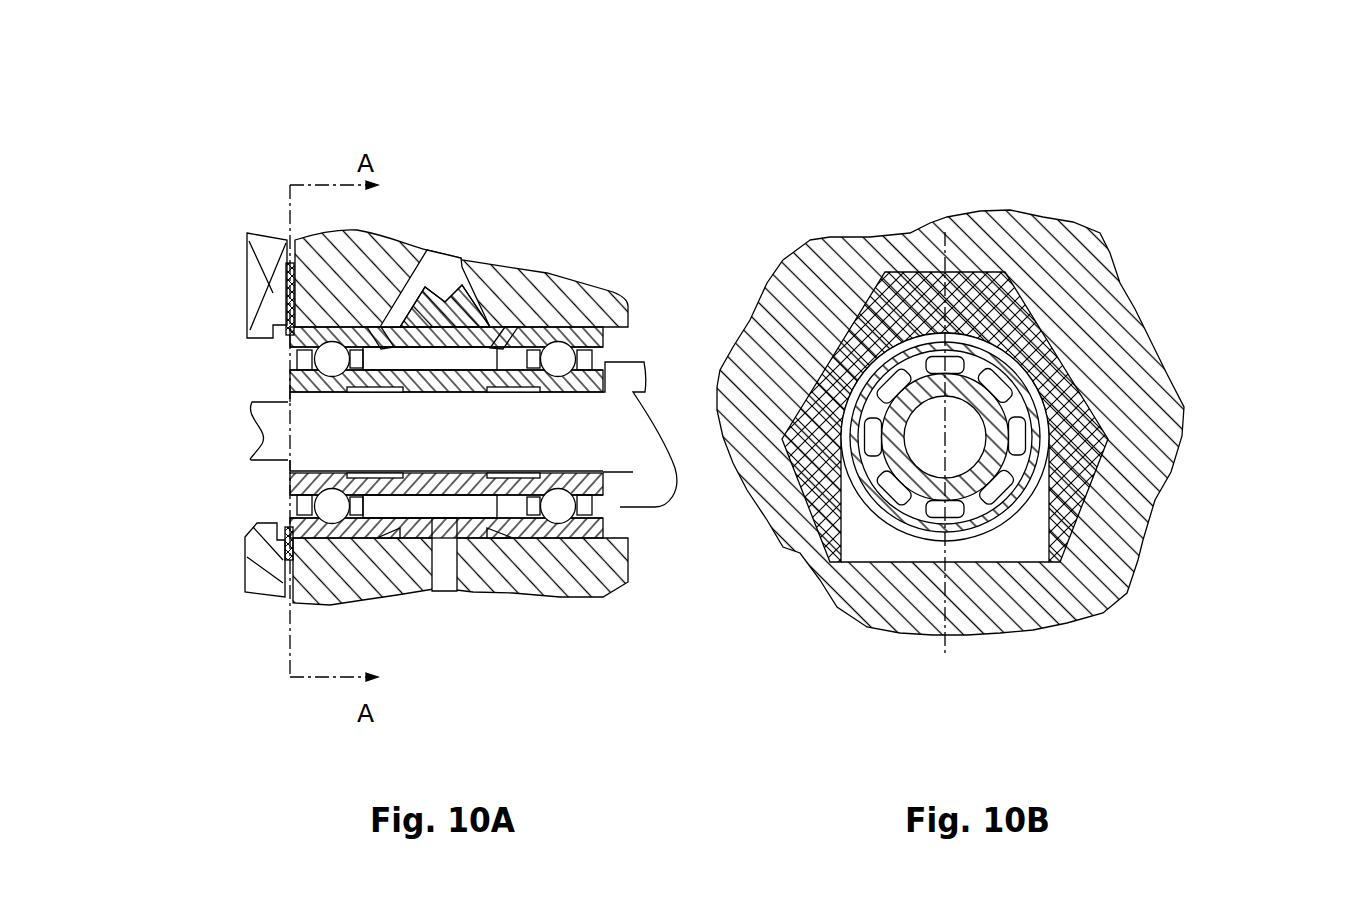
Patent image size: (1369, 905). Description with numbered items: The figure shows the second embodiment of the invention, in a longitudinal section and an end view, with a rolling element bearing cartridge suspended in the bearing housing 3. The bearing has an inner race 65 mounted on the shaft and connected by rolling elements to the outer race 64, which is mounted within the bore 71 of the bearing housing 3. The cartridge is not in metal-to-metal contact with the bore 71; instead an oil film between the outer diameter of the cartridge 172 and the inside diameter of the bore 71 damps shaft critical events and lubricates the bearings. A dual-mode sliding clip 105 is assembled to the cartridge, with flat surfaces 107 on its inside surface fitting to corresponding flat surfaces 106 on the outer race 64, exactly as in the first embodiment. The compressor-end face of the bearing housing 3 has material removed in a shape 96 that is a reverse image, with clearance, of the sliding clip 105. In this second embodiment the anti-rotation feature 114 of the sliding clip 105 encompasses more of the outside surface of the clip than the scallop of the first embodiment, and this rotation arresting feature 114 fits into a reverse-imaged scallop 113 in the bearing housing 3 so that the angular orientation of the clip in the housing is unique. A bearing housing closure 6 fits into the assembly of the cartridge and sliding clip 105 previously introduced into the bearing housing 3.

In FIG. 10A, the bearing housing 3 is at (395, 270).
In FIG. 10B, the bearing housing 3 is at (843, 290).
In FIG. 10A, the bearing housing closure 6 is at (273, 293).
In FIG. 10A, the outer race 64 is at (484, 340).
In FIG. 10B, the outer race 64 is at (1022, 498).
In FIG. 10A, the inner race 65 is at (290, 485).
In FIG. 10A, the bore 71 is at (440, 330).
In FIG. 10A, the shape of removed material 96 is at (288, 580).
In FIG. 10B, the shape of removed material 96 is at (1010, 550).
In FIG. 10A, the dual-mode sliding clip 105 is at (283, 313).
In FIG. 10B, the dual-mode sliding clip 105 is at (797, 478).
In FIG. 10B, the flat surfaces 106 is at (800, 403).
In FIG. 10B, the flat surfaces 107 is at (847, 548).
In FIG. 10B, the scallop 113 is at (1023, 293).
In FIG. 10B, the anti-rotation feature 114 is at (1093, 385).
In FIG. 10B, the cartridge outer diameter 172 is at (902, 537).